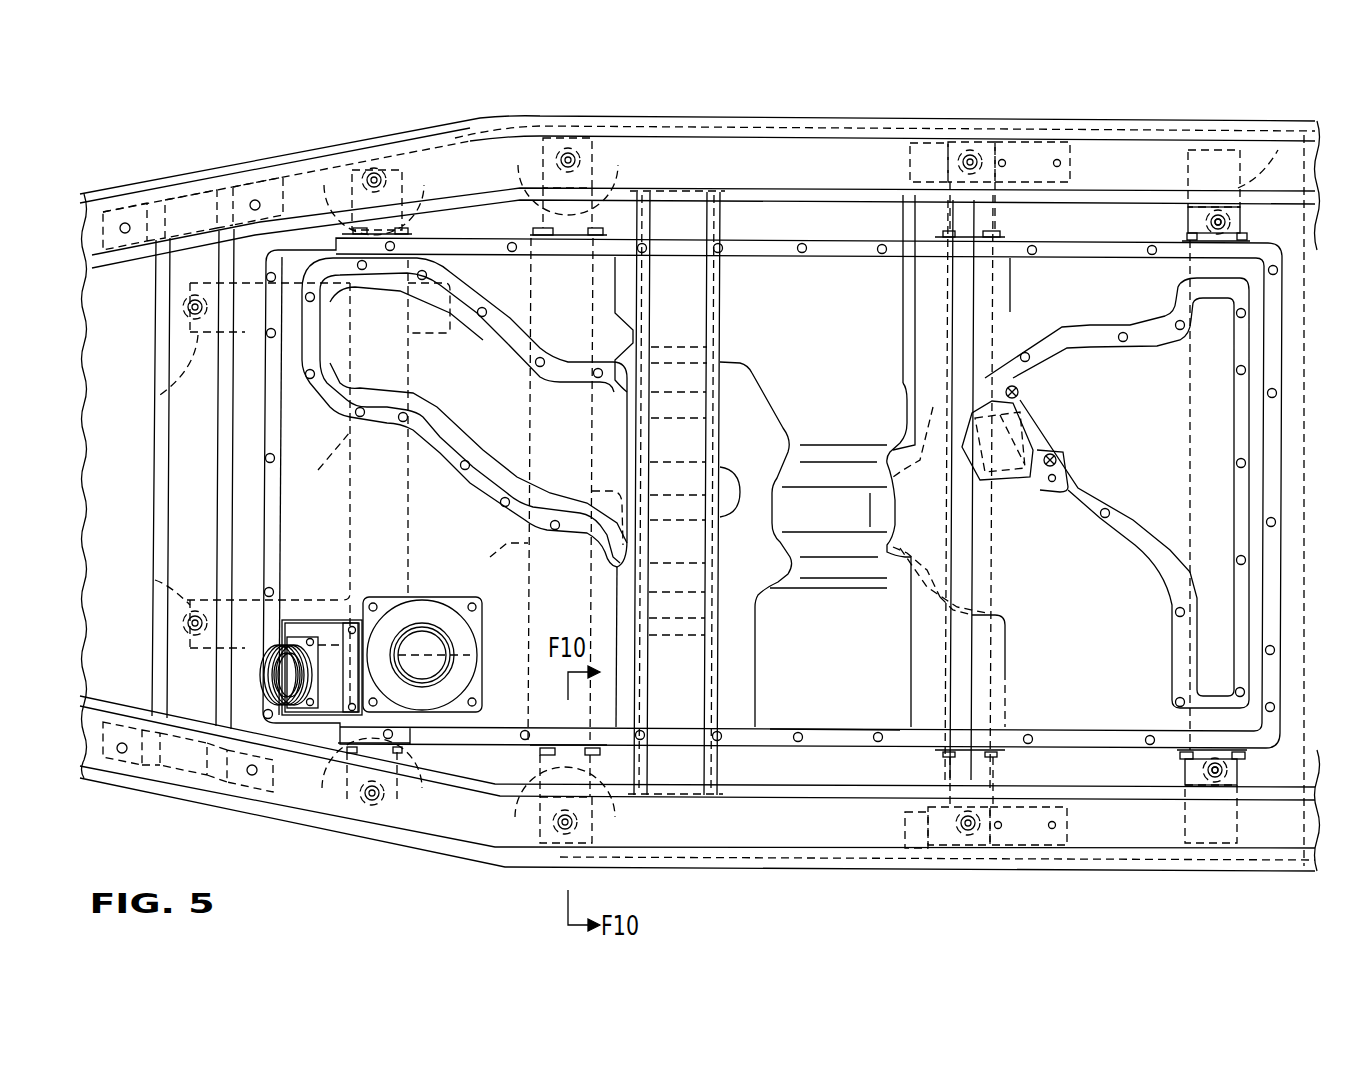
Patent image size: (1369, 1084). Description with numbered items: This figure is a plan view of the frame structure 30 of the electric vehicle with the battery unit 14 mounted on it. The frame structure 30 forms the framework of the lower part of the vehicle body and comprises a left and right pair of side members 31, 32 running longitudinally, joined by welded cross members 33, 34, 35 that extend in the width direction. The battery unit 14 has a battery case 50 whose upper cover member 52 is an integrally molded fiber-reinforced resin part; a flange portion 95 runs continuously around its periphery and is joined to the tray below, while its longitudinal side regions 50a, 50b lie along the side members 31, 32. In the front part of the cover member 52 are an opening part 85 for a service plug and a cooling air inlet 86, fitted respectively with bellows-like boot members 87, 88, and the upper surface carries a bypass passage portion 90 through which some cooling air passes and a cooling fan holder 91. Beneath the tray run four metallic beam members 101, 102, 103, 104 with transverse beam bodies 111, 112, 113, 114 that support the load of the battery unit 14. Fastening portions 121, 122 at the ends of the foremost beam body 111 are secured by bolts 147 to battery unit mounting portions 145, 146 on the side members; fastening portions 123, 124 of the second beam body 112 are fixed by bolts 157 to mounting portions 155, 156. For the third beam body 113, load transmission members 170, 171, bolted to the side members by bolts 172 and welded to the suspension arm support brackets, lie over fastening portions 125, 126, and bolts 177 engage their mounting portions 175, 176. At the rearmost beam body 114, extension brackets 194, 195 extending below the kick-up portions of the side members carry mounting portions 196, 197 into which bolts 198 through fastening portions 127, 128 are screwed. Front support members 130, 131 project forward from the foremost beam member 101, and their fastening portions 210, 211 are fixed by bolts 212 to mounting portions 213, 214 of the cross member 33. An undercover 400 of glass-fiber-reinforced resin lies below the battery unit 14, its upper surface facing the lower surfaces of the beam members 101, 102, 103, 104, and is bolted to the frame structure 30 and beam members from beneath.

The battery unit 14 is at (803, 138).
The frame structure 30 is at (729, 112).
The side member 31 is at (1100, 870).
The side member 32 is at (1108, 150).
The cross member 33 is at (185, 462).
The cross member 34 is at (720, 430).
The cross member 35 is at (963, 517).
The battery case 50 is at (845, 312).
The tray left flange 50a is at (262, 506).
The tray right flange 50b is at (1287, 488).
The cover member 52 is at (752, 265).
The opening part for service plug 85 is at (428, 640).
The cooling air inlet 86 is at (282, 666).
The boot member 87 is at (477, 643).
The boot member 88 is at (295, 715).
The bypass passage portion 90 is at (470, 350).
The cooling fan holder 91 is at (1098, 365).
The flange portion 95 is at (838, 747).
The beam member 101 is at (390, 510).
The beam member 102 is at (592, 487).
The beam member 103 is at (1007, 560).
The beam member 104 is at (1200, 480).
The beam body 111 is at (372, 392).
The beam body 112 is at (507, 550).
The beam body 113 is at (977, 597).
The beam body 114 is at (1166, 553).
The fastening portion 121 is at (330, 818).
The fastening portion 122 is at (313, 162).
The fastening portion 123 is at (553, 858).
The fastening portion 124 is at (522, 135).
The fastening portion 125 is at (925, 872).
The fastening portion 126 is at (925, 140).
The fastening portion 127 is at (1185, 770).
The fastening portion 128 is at (1188, 222).
The front support member 130 is at (250, 605).
The front support member 131 is at (233, 345).
The battery unit mounting portion 145 is at (420, 800).
The battery unit mounting portion 146 is at (410, 158).
The bolt 147 is at (374, 170).
The battery unit mounting portion 155 is at (612, 835).
The battery unit mounting portion 156 is at (625, 142).
The bolt 157 is at (571, 150).
The load transmission member 170 is at (1012, 848).
The load transmission member 171 is at (1020, 140).
The bolt 172 is at (1055, 168).
The battery unit mounting portion 175 is at (928, 826).
The battery unit mounting portion 176 is at (945, 160).
The bolt 177 is at (970, 150).
The extension bracket 194 is at (1240, 770).
The extension bracket 195 is at (1240, 222).
The battery unit mounting portion 196 is at (1222, 776).
The battery unit mounting portion 197 is at (1252, 195).
The bolt 198 is at (1205, 210).
The fastening portion 210 is at (158, 582).
The fastening portion 211 is at (158, 392).
The bolt 212 is at (190, 308).
The battery unit mounting portion 213 is at (185, 647).
The battery unit mounting portion 214 is at (197, 283).
The undercover 400 is at (747, 860).